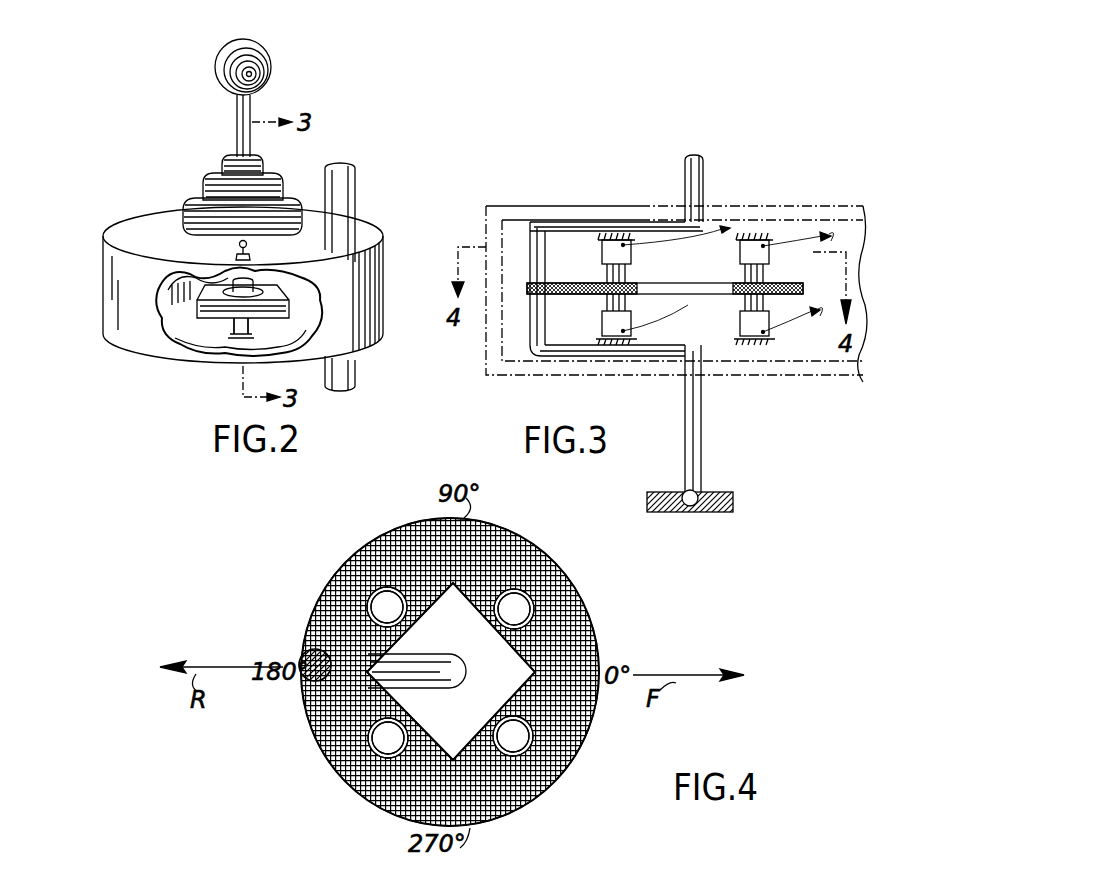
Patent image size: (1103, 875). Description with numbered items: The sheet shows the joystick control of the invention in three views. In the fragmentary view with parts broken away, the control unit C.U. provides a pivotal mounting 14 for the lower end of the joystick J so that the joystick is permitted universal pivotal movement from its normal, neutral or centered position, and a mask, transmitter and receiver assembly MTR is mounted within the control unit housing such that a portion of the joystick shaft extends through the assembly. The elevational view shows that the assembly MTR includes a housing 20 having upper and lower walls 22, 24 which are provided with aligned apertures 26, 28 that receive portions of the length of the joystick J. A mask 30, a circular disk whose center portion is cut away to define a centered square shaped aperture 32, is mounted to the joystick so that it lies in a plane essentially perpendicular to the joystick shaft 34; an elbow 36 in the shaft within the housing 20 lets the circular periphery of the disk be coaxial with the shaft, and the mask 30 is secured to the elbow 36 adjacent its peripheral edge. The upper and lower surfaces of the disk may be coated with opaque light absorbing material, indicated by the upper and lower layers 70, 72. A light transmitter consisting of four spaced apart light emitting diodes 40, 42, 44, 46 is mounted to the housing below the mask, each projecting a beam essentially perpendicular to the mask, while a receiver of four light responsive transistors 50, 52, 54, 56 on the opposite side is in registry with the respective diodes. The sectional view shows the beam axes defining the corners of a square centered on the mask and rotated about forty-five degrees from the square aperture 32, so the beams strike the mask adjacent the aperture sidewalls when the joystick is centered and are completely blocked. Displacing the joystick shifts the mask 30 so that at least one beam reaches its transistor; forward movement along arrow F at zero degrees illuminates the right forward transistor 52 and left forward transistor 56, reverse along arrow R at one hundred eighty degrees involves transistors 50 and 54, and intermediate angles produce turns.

In FIG. 2, the pivotal mounting 14 is at (233, 337).
In FIG. 3, the pivotal mounting 14 is at (716, 490).
In FIG. 4, the pivotal mounting 14 is at (470, 672).
In FIG. 2, the housing 20 is at (106, 230).
In FIG. 3, the housing 20 is at (681, 282).
In FIG. 3, the upper wall 22 is at (500, 206).
In FIG. 3, the lower wall 24 is at (848, 378).
In FIG. 3, the aperture 26 is at (775, 207).
In FIG. 3, the aperture 28 is at (740, 376).
In FIG. 3, the mask 30 is at (695, 260).
In FIG. 4, the mask 30 is at (505, 662).
In FIG. 3, the square shaped aperture 32 is at (686, 298).
In FIG. 4, the square shaped aperture 32 is at (448, 585).
In FIG. 2, the joystick shaft 34 is at (237, 116).
In FIG. 3, the joystick shaft 34 is at (685, 167).
In FIG. 3, the elbow 36 is at (530, 239).
In FIG. 4, the elbow 36 is at (300, 655).
In FIG. 4, the light emitting diode 40 is at (342, 576).
In FIG. 4, the light emitting diode 42 is at (578, 578).
In FIG. 3, the light emitting diode 44 is at (602, 322).
In FIG. 4, the light emitting diode 44 is at (332, 766).
In FIG. 3, the light emitting diode 46 is at (768, 350).
In FIG. 4, the light emitting diode 46 is at (574, 760).
In FIG. 4, the light responsive transistor 50 is at (370, 600).
In FIG. 4, the light responsive transistor 52 is at (536, 608).
In FIG. 3, the light responsive transistor 54 is at (632, 253).
In FIG. 4, the light responsive transistor 54 is at (369, 738).
In FIG. 3, the light responsive transistor 56 is at (740, 255).
In FIG. 4, the light responsive transistor 56 is at (540, 735).
In FIG. 3, the upper layer 70 is at (784, 342).
In FIG. 4, the upper layer 70 is at (530, 536).
In FIG. 3, the lower layer 72 is at (769, 332).
In FIG. 4, the lower layer 72 is at (536, 796).
In FIG. 2, the joystick J is at (216, 62).
In FIG. 3, the joystick J is at (618, 164).
In FIG. 2, the control unit C.U. is at (144, 213).
In FIG. 2, the mask, transmitter and receiver assembly MTR is at (196, 300).